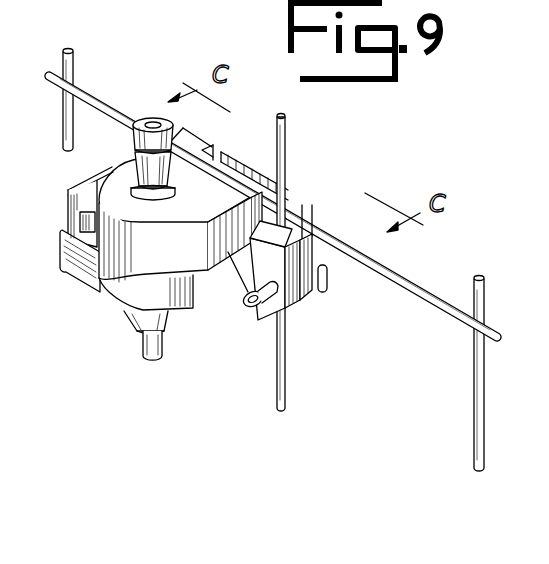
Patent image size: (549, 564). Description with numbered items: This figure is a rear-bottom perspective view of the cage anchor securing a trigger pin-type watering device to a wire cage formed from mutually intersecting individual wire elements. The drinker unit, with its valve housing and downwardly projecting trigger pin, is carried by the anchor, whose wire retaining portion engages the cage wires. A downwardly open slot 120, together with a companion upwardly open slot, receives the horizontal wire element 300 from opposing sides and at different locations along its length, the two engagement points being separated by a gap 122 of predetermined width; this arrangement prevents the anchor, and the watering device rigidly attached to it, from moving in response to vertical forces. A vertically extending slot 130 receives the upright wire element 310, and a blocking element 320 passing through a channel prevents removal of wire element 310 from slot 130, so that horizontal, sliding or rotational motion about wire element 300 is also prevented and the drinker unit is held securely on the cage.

The U-shaped slot 120 is at (243, 173).
The gap 122 is at (216, 148).
The U-shaped slot 130 is at (306, 289).
The wire element 300 is at (338, 243).
The wire element 310 is at (282, 369).
The blocking element 320 is at (241, 284).